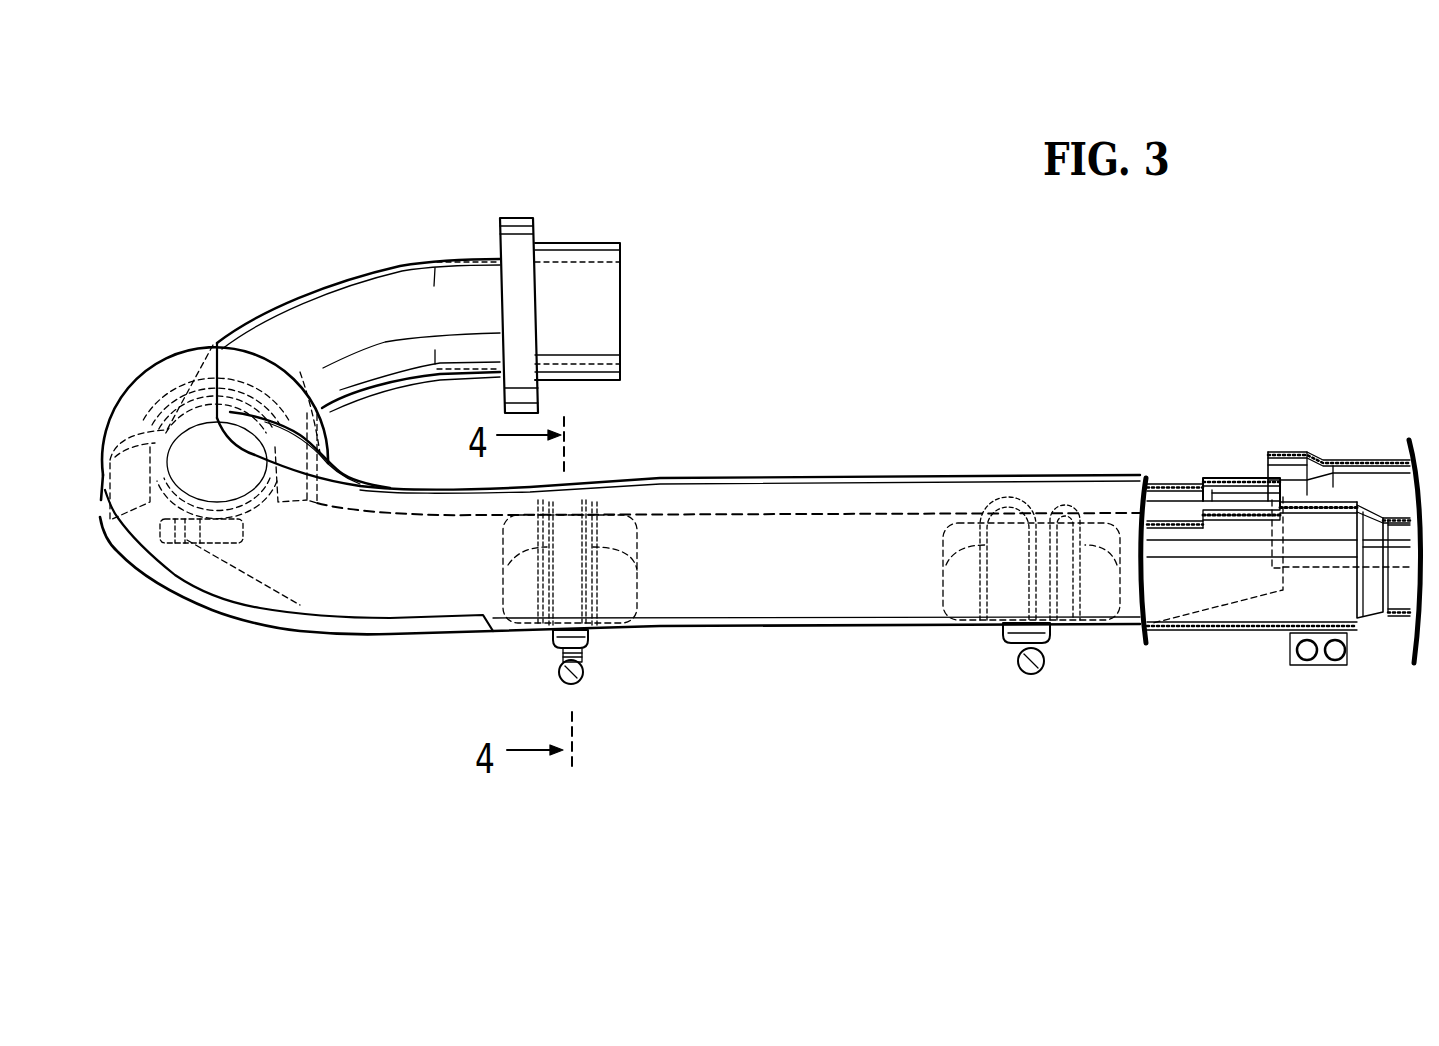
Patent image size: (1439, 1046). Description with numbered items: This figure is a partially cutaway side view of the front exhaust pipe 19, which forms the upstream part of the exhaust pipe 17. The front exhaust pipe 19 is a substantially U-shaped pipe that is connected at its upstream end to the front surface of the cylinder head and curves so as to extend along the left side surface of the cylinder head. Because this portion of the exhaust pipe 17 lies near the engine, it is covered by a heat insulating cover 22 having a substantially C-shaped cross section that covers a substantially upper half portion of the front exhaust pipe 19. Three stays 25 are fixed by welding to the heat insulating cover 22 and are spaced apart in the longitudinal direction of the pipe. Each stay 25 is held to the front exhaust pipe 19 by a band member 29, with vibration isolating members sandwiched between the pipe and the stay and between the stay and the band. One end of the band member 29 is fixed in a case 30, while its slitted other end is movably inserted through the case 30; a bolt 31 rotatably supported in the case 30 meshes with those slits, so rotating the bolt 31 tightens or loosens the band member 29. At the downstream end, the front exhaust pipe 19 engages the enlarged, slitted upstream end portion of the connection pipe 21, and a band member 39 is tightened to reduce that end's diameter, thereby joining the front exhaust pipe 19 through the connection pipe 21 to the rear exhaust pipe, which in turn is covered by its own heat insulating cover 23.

The exhaust pipe 17 is at (790, 636).
The front exhaust pipe 19 is at (403, 265).
The connection pipe 21 is at (1397, 618).
The heat insulating cover 22 is at (705, 478).
The heat insulating cover 23 is at (1362, 458).
The stay 25 is at (237, 365).
The band member 29 is at (161, 400).
The case 30 is at (230, 543).
The bolt 31 is at (175, 543).
The band member 39 is at (1318, 666).